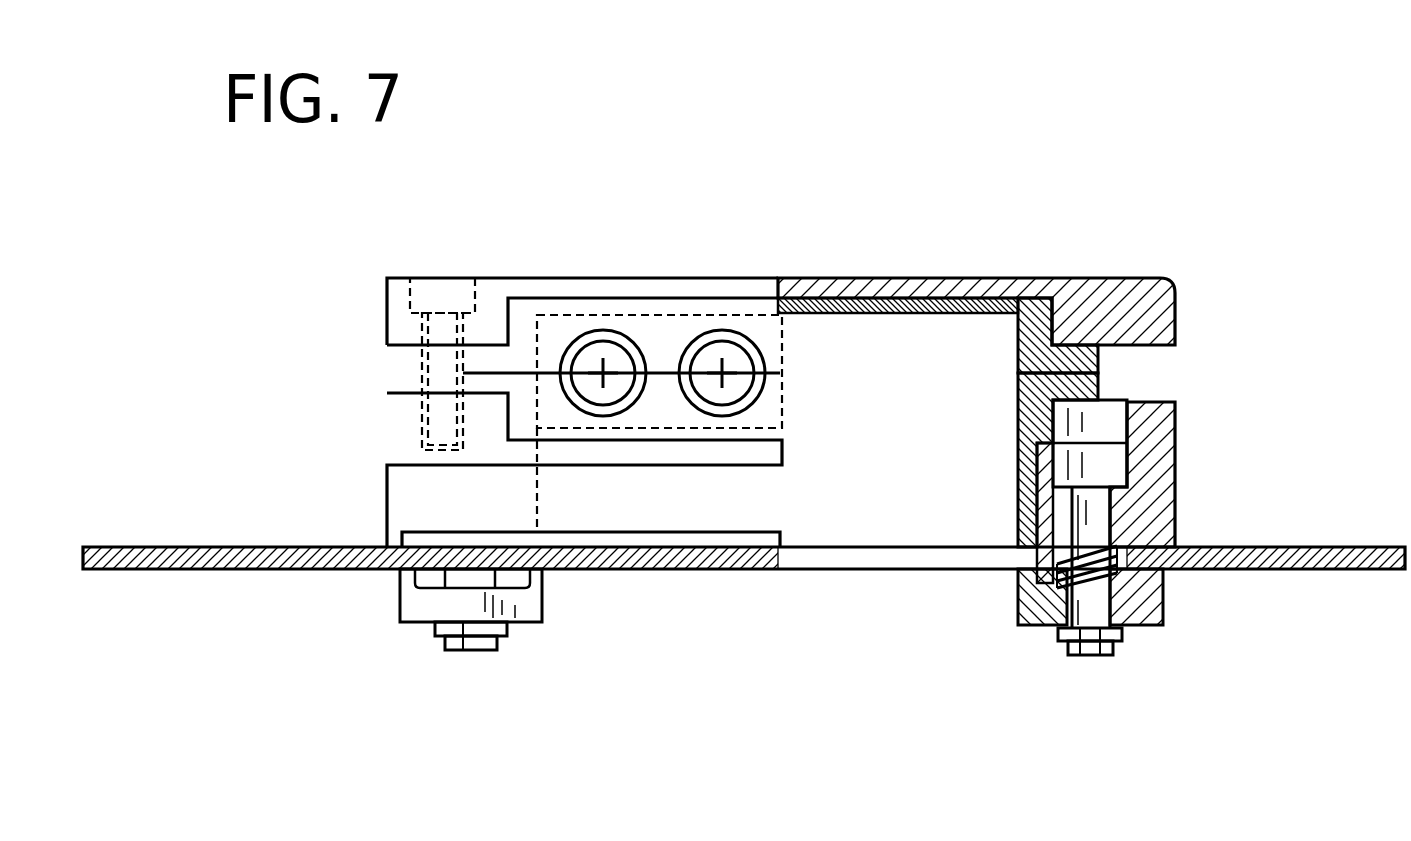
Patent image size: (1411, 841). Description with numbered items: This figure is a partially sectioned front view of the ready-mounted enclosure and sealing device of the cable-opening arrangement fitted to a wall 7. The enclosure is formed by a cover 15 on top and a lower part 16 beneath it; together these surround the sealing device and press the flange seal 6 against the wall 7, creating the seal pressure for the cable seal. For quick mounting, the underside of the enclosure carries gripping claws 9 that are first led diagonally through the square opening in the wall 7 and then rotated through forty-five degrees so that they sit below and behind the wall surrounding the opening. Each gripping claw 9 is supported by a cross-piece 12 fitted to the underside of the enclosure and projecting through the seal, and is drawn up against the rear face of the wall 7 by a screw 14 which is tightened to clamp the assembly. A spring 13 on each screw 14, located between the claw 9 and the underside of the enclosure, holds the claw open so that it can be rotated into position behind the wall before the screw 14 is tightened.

The flange seal 6 is at (1163, 545).
The wall 7 is at (1323, 549).
The gripping claw 9 is at (1160, 592).
The cross-piece 12 is at (1035, 552).
The spring 13 is at (1072, 592).
The screw 14 is at (1100, 652).
The cover 15 is at (1160, 312).
The lower part of the enclosure 16 is at (1165, 405).